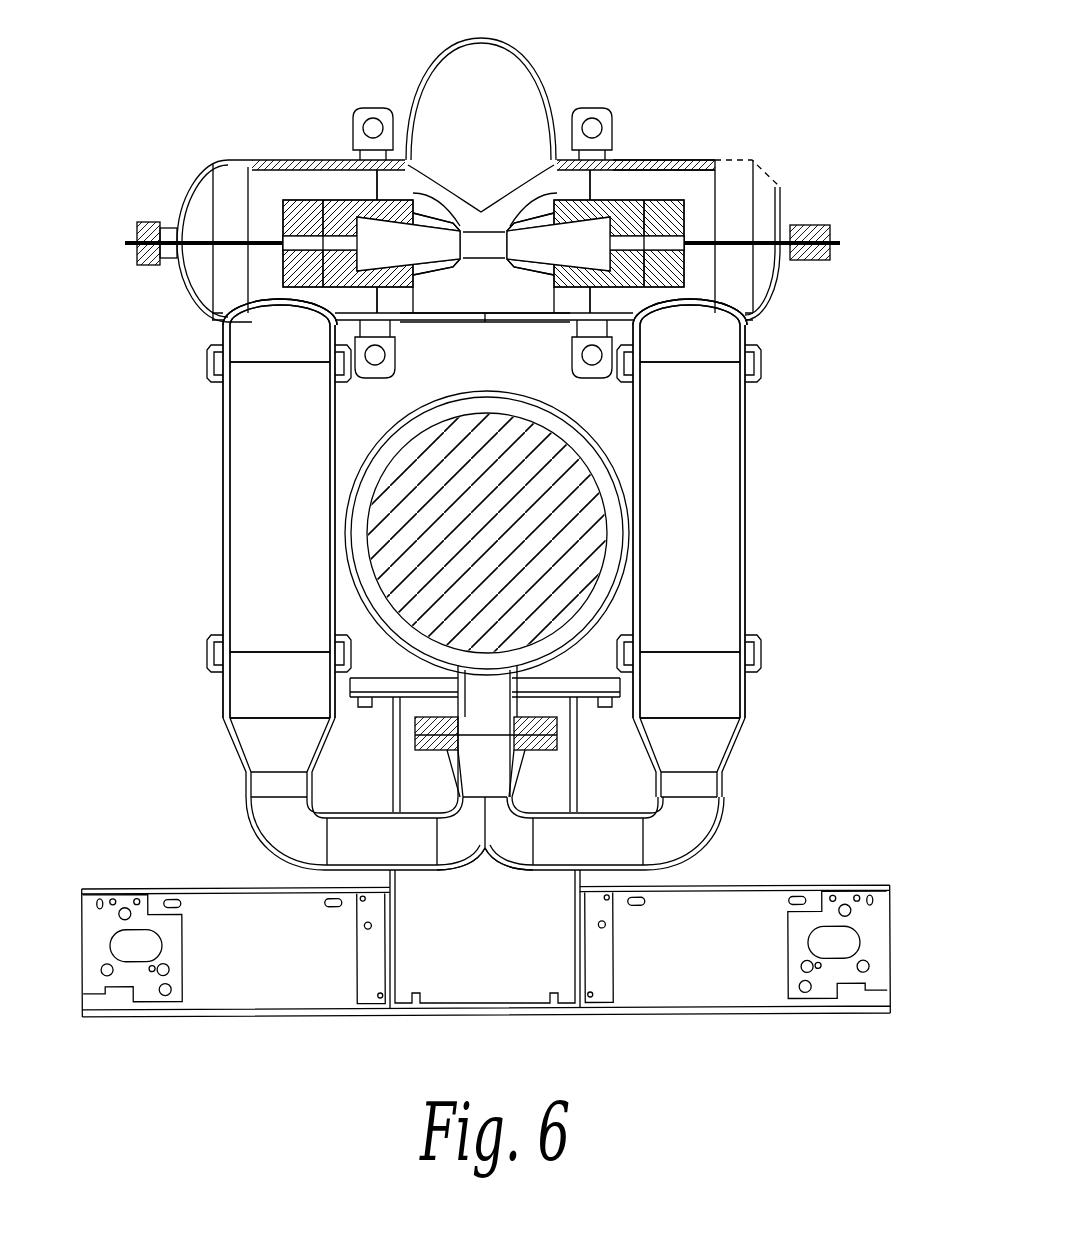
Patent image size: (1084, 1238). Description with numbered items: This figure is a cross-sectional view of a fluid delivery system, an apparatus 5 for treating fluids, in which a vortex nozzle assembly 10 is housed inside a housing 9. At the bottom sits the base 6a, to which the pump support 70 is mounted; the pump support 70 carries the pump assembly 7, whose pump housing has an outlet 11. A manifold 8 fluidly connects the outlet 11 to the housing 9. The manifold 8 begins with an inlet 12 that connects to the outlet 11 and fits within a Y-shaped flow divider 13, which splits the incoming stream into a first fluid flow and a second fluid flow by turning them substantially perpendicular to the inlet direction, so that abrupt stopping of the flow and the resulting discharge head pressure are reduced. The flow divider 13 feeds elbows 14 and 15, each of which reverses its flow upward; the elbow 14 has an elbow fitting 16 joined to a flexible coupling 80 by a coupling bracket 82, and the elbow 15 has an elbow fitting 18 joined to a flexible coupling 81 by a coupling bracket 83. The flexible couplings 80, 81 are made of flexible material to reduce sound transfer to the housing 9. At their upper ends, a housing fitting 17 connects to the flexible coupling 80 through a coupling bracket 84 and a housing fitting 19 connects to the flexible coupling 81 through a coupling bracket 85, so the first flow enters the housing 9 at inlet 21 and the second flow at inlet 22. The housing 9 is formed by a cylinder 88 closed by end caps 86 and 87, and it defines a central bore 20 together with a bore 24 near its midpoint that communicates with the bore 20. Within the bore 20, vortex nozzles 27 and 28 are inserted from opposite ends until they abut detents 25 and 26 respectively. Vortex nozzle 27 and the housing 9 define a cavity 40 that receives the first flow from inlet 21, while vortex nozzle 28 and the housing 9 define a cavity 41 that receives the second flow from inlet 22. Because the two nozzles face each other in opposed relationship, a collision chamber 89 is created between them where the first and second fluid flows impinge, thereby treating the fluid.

The apparatus for treating fluids 5 is at (826, 122).
The base 6a is at (684, 964).
The pump assembly 7 is at (398, 430).
The manifold 8 is at (748, 755).
The housing 9 is at (733, 147).
The vortex nozzle assembly 10 is at (513, 175).
The outlet 11 is at (473, 714).
The inlet 12 is at (473, 777).
The flow divider 13 is at (487, 850).
The elbow 14 is at (708, 840).
The elbow 15 is at (262, 840).
The elbow fitting 16 is at (222, 695).
The housing fitting 17 is at (222, 333).
The elbow fitting 18 is at (750, 690).
The housing fitting 19 is at (752, 333).
The bore 20 is at (463, 318).
The inlet 21 is at (288, 310).
The inlet 22 is at (682, 307).
The bore 24 is at (480, 210).
The detent 25 is at (390, 332).
The detent 26 is at (570, 335).
The vortex nozzle 27 is at (440, 257).
The vortex nozzle 28 is at (540, 270).
The cavity 40 is at (256, 205).
The cavity 41 is at (679, 197).
The pump support 70 is at (404, 795).
The flexible coupling 80 is at (222, 527).
The flexible coupling 81 is at (748, 515).
The coupling bracket 82 is at (205, 655).
The coupling bracket 83 is at (765, 648).
The coupling bracket 84 is at (205, 367).
The coupling bracket 85 is at (768, 365).
The end cap 86 is at (195, 180).
The end cap 87 is at (782, 178).
The cylinder 88 is at (633, 160).
The collision chamber 89 is at (468, 272).